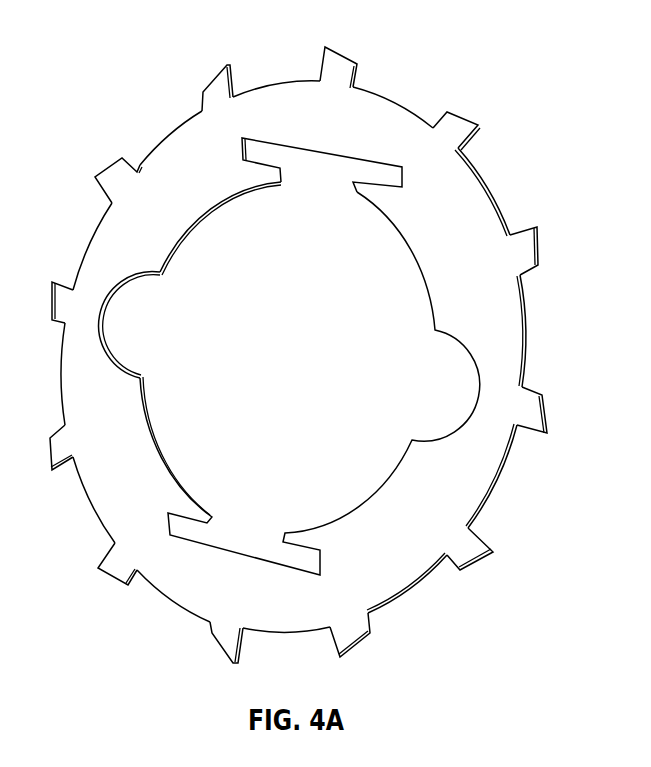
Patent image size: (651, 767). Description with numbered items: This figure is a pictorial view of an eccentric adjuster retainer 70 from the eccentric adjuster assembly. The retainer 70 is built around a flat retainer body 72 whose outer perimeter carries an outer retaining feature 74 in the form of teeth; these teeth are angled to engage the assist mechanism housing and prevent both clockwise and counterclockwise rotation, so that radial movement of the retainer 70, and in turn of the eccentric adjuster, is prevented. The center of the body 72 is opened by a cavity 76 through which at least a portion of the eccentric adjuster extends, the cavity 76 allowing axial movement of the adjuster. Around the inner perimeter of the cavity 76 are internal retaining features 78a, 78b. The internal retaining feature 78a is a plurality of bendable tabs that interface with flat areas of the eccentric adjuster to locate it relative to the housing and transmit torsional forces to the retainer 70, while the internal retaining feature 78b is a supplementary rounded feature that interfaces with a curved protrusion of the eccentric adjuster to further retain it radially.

The eccentric adjuster retainer 70 is at (119, 70).
The retainer body 72 is at (452, 203).
The outer retaining feature 74 is at (532, 255).
The cavity 76 is at (348, 467).
The internal retaining feature 78a is at (357, 192).
The internal retaining feature 78b is at (110, 303).